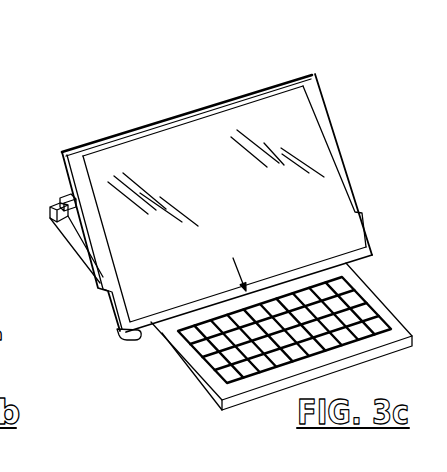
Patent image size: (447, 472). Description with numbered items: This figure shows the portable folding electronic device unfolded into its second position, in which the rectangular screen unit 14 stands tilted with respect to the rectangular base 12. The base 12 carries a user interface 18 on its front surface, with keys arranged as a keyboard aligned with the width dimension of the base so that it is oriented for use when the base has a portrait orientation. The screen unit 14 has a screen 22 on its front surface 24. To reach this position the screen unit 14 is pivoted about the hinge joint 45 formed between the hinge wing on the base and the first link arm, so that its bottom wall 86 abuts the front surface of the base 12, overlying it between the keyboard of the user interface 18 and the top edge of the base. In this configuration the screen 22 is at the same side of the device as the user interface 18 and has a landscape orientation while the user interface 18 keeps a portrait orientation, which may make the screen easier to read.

The base 12 is at (395, 302).
The screen unit 14 is at (334, 80).
The user interface 18 is at (181, 352).
The screen 22 is at (163, 143).
The front surface 24 is at (328, 133).
The hinge joint 45 is at (55, 193).
The bottom wall 86 is at (134, 341).